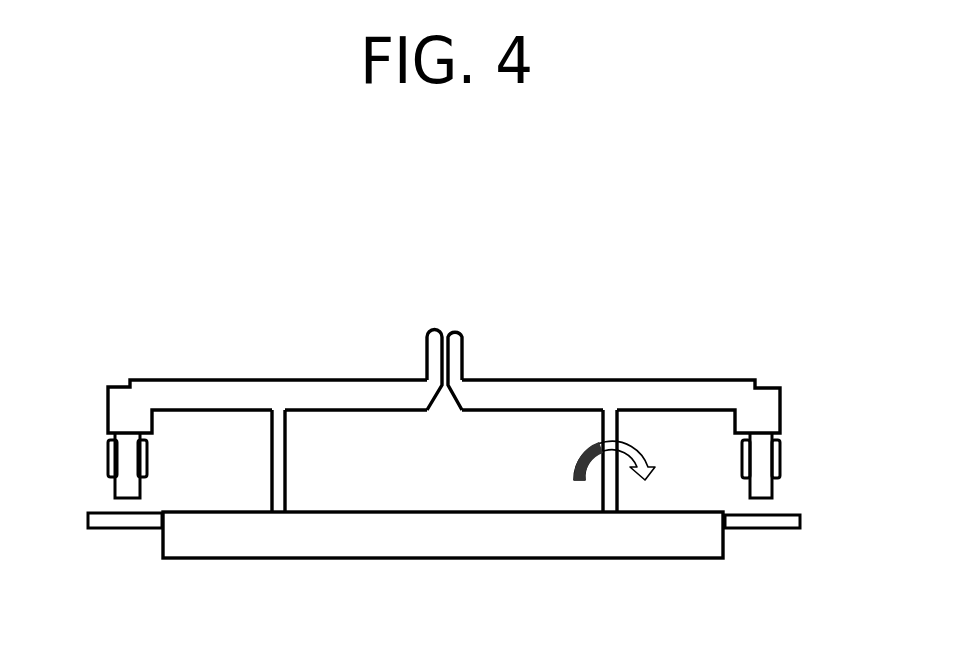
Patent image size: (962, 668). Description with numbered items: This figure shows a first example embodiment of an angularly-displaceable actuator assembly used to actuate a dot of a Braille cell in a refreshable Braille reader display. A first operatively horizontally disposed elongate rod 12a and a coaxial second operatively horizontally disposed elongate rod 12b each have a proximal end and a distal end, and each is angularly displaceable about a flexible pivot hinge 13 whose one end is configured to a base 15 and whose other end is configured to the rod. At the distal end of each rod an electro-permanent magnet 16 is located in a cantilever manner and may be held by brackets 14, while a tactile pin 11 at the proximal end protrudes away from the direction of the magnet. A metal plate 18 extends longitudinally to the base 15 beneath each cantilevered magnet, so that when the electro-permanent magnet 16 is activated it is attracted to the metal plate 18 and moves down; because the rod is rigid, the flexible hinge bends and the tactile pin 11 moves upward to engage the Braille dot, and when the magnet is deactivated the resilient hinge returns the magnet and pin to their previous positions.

The tactile pin 11 is at (453, 356).
The first operatively horizontally disposed elongate rod 12a is at (665, 390).
The second operatively horizontally disposed elongate rod 12b is at (217, 393).
The pivot hinge 13 is at (278, 483).
The brackets 14 is at (138, 477).
The base 15 is at (443, 535).
The electro-permanent magnet 16 is at (125, 460).
The metal plate 18 is at (125, 518).